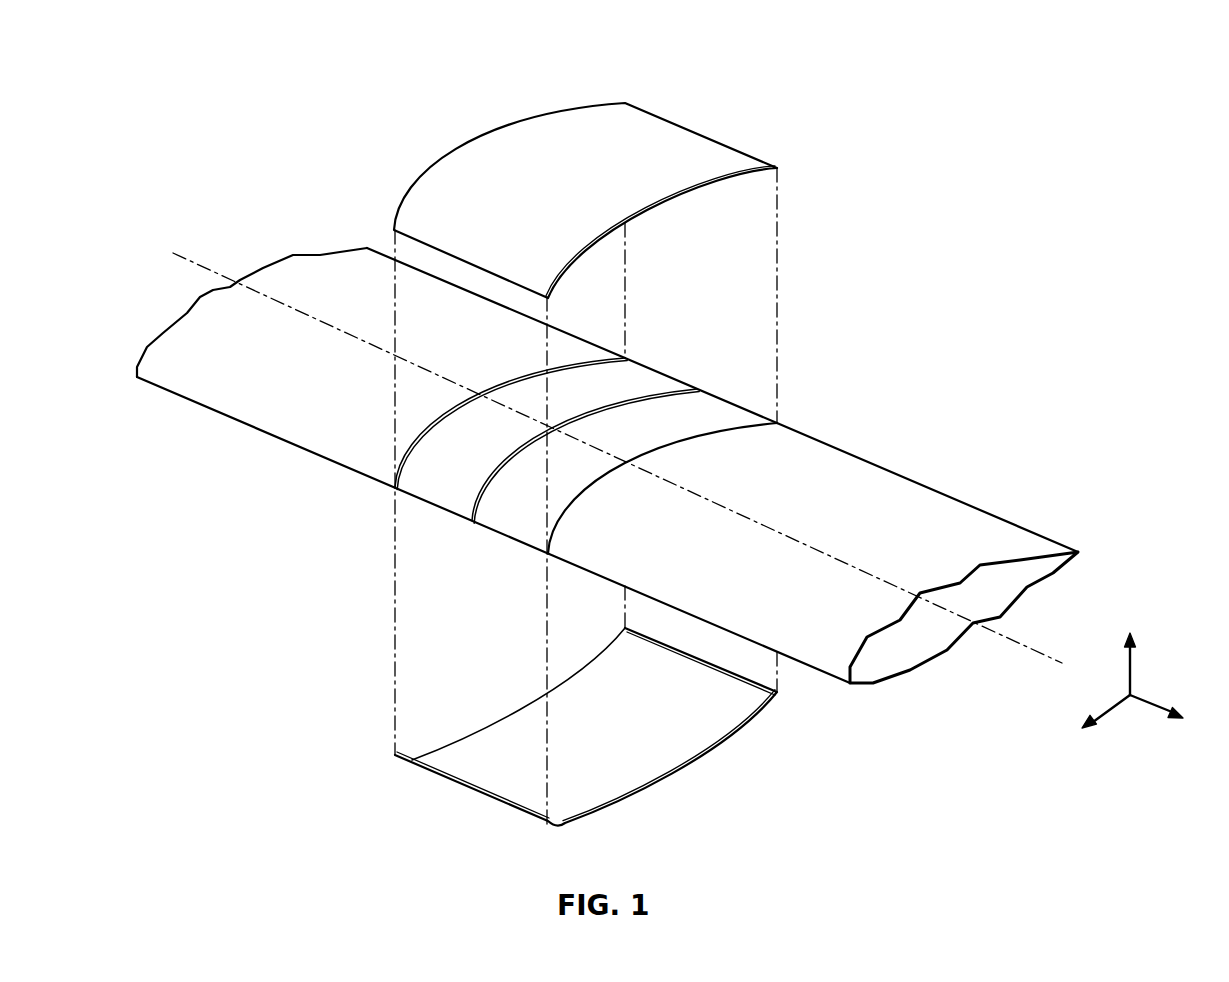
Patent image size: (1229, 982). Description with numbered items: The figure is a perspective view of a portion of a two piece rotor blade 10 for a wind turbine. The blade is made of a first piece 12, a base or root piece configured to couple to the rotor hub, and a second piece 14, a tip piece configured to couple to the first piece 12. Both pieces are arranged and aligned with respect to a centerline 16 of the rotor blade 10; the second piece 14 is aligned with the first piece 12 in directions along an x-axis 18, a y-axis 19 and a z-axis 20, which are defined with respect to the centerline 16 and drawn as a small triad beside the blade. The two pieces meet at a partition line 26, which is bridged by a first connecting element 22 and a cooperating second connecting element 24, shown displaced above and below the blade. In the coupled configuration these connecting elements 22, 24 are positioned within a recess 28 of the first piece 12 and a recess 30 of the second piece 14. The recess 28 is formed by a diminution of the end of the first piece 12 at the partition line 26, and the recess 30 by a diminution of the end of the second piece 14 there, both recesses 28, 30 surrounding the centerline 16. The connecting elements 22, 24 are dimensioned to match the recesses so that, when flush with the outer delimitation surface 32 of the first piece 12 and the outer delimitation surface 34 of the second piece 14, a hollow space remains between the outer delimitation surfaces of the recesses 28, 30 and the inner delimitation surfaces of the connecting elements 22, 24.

The two piece rotor blade 10 is at (675, 445).
The first piece 12 is at (813, 553).
The second piece 14 is at (381, 336).
The centerline 16 is at (1025, 646).
The x-axis 18 is at (1132, 665).
The y-axis 19 is at (1110, 710).
The z-axis 20 is at (1148, 700).
The first connecting element 22 is at (598, 123).
The second connecting element 24 is at (660, 767).
The partition line 26 is at (477, 510).
The recess 28 is at (705, 420).
The recess 30 is at (442, 487).
The outer delimitation surface 32 is at (838, 472).
The outer delimitation surface 34 is at (330, 263).